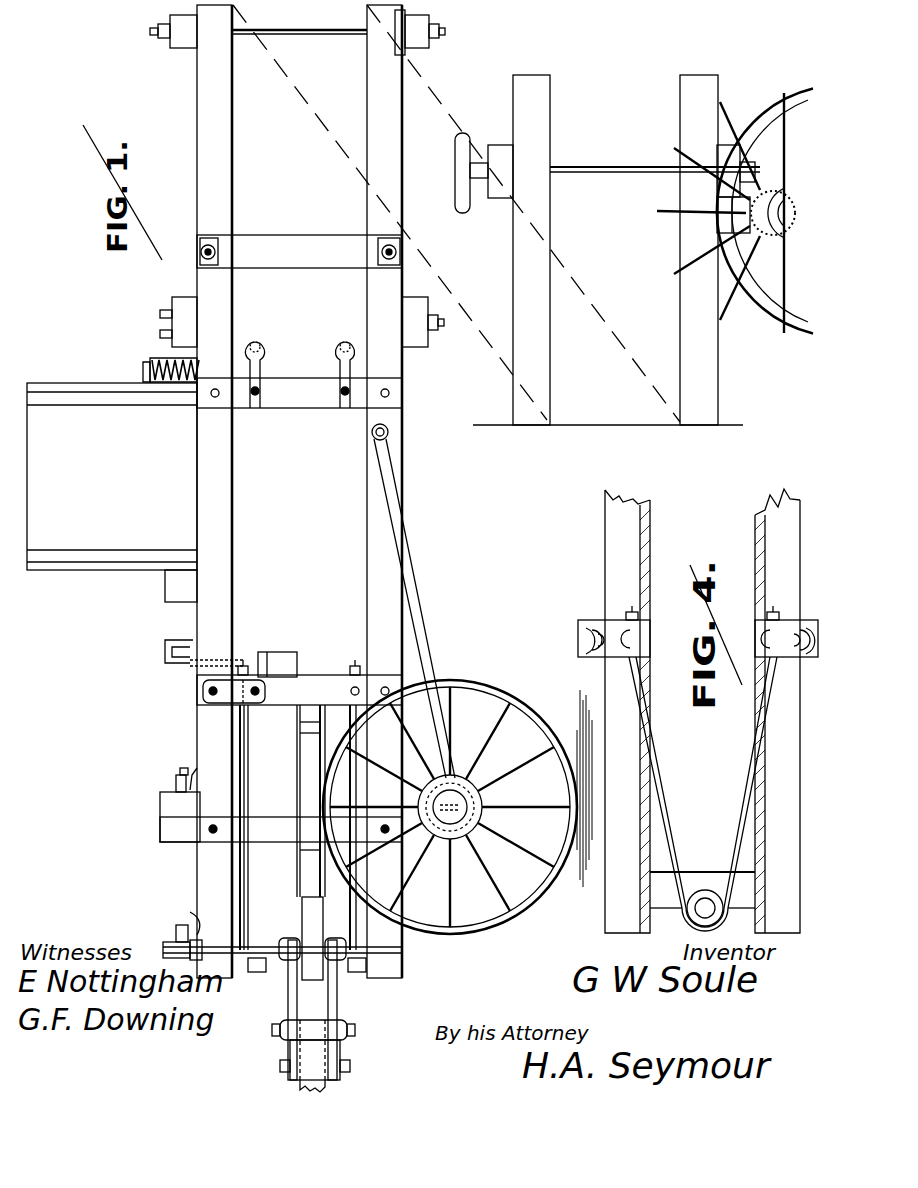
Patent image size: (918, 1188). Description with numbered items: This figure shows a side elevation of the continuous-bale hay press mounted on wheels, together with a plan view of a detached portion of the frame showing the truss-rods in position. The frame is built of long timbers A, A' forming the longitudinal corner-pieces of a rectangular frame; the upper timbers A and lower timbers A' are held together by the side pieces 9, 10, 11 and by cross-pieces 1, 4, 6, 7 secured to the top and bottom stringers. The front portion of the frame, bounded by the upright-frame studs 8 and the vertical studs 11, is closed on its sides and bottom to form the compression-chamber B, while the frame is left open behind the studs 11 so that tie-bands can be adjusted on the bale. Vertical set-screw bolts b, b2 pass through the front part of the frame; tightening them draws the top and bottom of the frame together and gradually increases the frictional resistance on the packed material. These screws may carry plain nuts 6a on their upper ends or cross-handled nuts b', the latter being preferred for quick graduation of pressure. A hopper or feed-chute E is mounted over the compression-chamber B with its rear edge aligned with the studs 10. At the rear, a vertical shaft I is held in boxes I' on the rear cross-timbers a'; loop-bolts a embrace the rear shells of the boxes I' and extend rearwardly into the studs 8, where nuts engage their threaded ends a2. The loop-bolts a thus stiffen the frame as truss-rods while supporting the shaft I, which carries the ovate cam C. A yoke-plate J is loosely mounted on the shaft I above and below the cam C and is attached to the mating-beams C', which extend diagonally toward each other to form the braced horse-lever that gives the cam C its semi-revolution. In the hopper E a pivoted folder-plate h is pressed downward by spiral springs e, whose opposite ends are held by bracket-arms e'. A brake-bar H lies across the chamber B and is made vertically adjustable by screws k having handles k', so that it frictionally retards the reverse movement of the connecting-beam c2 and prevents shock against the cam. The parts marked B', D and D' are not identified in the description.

In FIG. 1, the cross-piece 1 is at (180, 805).
In FIG. 1, the cross-piece 4 is at (178, 322).
In FIG. 1, the cross-piece 6 is at (297, 32).
In FIG. 1, the nut 6a is at (158, 30).
In FIG. 4, the cross-piece 7 is at (621, 189).
In FIG. 4, the upright-frame stud 8 is at (628, 658).
In FIG. 1, the side piece 9 is at (281, 829).
In FIG. 1, the side piece (stud) 10 is at (299, 393).
In FIG. 1, the side piece (vertical stud) 11 is at (299, 251).
In FIG. 1, the long timber A is at (299, 690).
In FIG. 4, the long timber A is at (702, 711).
In FIG. 4, the long timber A' is at (608, 250).
In FIG. 1, the compression-chamber B is at (299, 491).
In FIG. 1, the post B' is at (298, 309).
In FIG. 1, the ovate cam C is at (311, 842).
In FIG. 1, the mating-beams C' is at (318, 1016).
In FIG. 1, the wheel D is at (450, 679).
In FIG. 4, the wheel D' is at (735, 211).
In FIG. 1, the hopper or feed-chute E is at (112, 492).
In FIG. 1, the brake-bar H is at (287, 658).
In FIG. 1, the vertical shaft I is at (282, 951).
In FIG. 4, the vertical shaft I is at (705, 888).
In FIG. 1, the boxes I' is at (317, 966).
In FIG. 4, the boxes I' is at (688, 926).
In FIG. 1, the yoke-plate J is at (307, 975).
In FIG. 1, the loop-bolts a is at (298, 827).
In FIG. 4, the loop-bolts a is at (703, 794).
In FIG. 1, the rear cross-timbers a' is at (293, 366).
In FIG. 1, the threaded ends a2 is at (243, 665).
In FIG. 4, the threaded ends a2 is at (630, 620).
In FIG. 4, the vertical set-screw bolt b is at (655, 160).
In FIG. 4, the cross-handled nut b' is at (463, 159).
In FIG. 1, the vertical set-screw bolt b2 is at (300, 17).
In FIG. 1, the connecting-beam c2 is at (162, 385).
In FIG. 1, the spiral springs e is at (168, 336).
In FIG. 1, the bracket-arms e' is at (142, 345).
In FIG. 1, the folder-plate h is at (315, 978).
In FIG. 1, the screws k is at (205, 653).
In FIG. 1, the handles k' is at (153, 654).